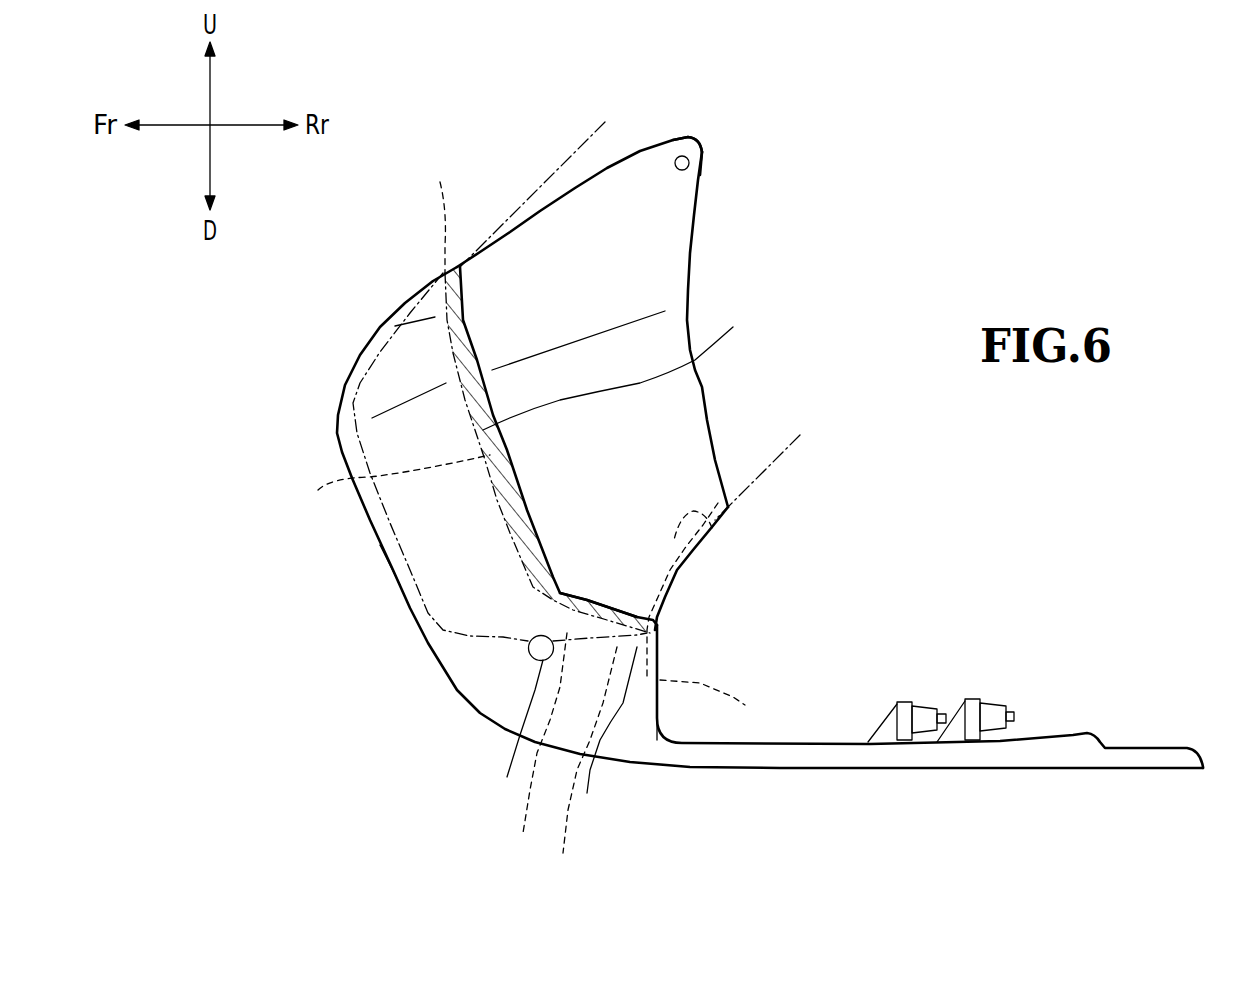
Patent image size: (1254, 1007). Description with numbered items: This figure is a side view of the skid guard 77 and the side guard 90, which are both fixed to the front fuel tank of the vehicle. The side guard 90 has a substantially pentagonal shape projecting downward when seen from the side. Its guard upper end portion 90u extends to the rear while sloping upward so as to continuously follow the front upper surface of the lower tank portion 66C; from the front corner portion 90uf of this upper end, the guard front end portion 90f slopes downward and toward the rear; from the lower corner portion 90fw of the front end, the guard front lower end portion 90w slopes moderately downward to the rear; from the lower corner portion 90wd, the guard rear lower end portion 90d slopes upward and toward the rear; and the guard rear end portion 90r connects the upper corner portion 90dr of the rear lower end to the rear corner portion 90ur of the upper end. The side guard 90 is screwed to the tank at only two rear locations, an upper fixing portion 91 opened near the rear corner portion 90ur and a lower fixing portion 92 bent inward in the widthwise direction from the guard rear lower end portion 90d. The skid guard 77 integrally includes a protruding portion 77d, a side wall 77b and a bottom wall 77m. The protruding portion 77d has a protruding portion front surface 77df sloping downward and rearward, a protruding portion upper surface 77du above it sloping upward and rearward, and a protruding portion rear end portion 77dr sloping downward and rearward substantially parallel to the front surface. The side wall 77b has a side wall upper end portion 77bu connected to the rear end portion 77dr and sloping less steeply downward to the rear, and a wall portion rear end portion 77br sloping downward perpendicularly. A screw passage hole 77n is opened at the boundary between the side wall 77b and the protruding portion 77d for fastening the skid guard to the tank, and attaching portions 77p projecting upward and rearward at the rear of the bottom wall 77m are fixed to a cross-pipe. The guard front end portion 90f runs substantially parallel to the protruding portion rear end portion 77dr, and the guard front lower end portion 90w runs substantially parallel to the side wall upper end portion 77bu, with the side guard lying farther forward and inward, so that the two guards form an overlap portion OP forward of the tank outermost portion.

The lower tank portion 66C is at (580, 143).
The skid guard 77 is at (762, 563).
The protruding portion 77d is at (367, 523).
The protruding portion upper surface 77du is at (385, 330).
The protruding portion front surface 77df is at (392, 570).
The protruding portion rear end portion 77dr is at (490, 380).
The side wall upper end portion 77bu is at (600, 603).
The side wall 77b is at (604, 737).
The wall portion rear end portion 77br is at (658, 698).
The screw passage hole 77n is at (516, 731).
The attaching portion 77p is at (917, 702).
The bottom wall 77m is at (1162, 744).
The side guard 90 is at (582, 468).
The guard upper end portion 90u is at (607, 173).
The rear corner portion 90ur is at (697, 137).
The front corner portion 90uf is at (439, 215).
The guard rear end portion 90r is at (702, 387).
The upper corner portion 90dr is at (730, 507).
The guard rear lower end portion 90d is at (673, 583).
The guard front end portion 90f is at (386, 485).
The lower corner portion 90fw is at (531, 750).
The guard front lower end portion 90w is at (587, 767).
The lower corner portion 90wd is at (723, 701).
The upper fixing portion 91 is at (689, 166).
The lower fixing portion 92 is at (712, 528).
The overlap portion OP is at (619, 366).